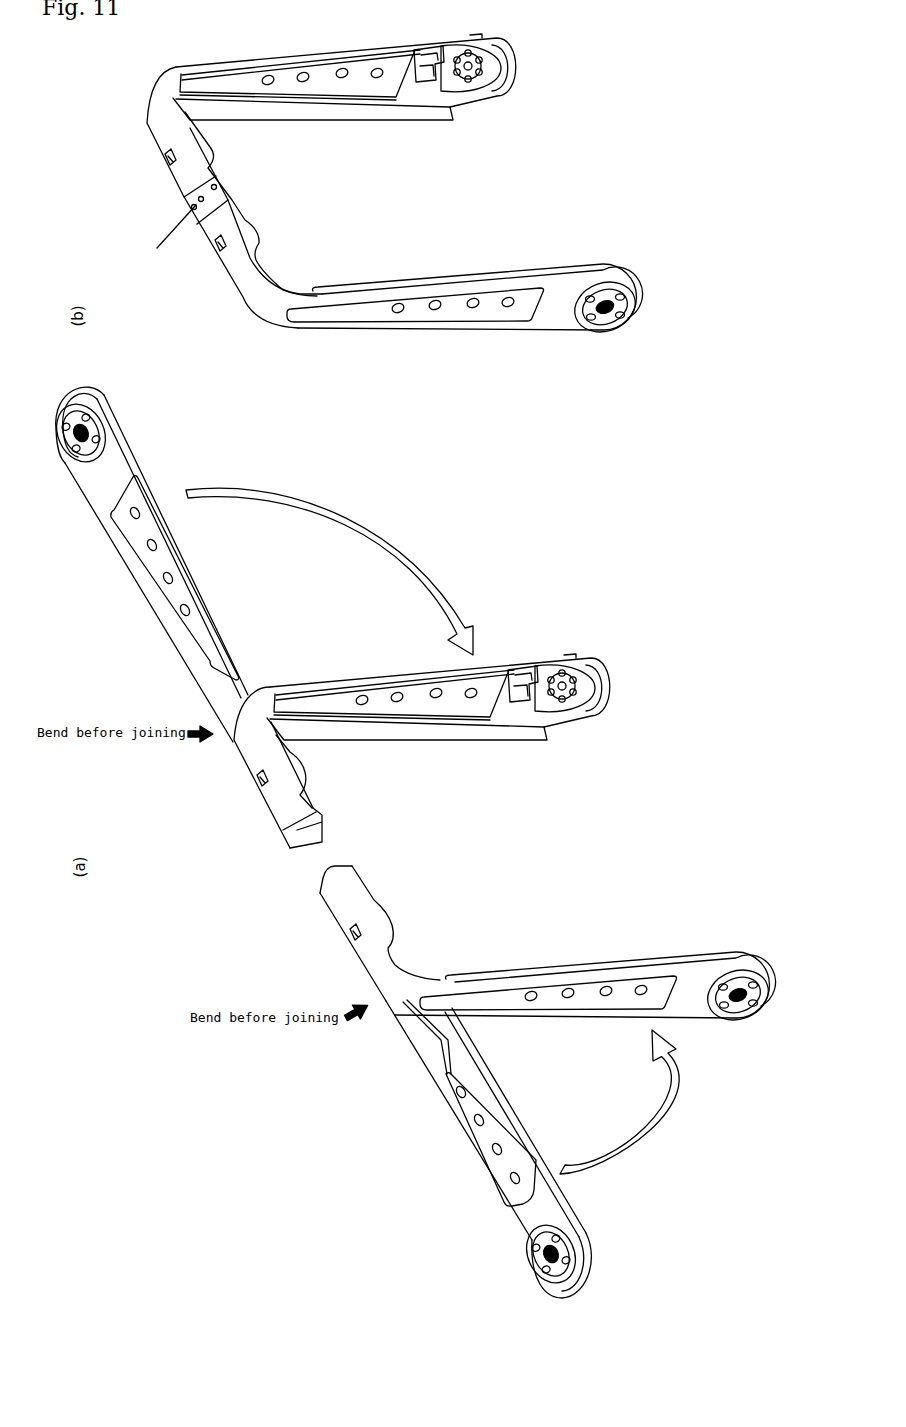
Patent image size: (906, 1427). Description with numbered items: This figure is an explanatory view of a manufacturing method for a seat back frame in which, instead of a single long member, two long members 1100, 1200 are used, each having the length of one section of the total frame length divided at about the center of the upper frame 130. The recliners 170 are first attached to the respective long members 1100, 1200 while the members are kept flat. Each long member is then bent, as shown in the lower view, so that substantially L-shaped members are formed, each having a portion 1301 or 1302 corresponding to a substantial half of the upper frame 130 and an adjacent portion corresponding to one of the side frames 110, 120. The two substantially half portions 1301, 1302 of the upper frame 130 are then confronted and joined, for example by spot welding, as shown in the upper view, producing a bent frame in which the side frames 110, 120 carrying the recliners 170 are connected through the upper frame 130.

The side frame 110 is at (357, 82).
The side frame 120 is at (483, 332).
The upper frame 130 is at (177, 188).
The recliner 170 is at (77, 463).
The long member 1100 is at (167, 628).
The long member 1200 is at (437, 1098).
The portion corresponding to substantial half of the upper frame 1301 is at (268, 808).
The portion corresponding to substantial half of the upper frame 1302 is at (333, 907).